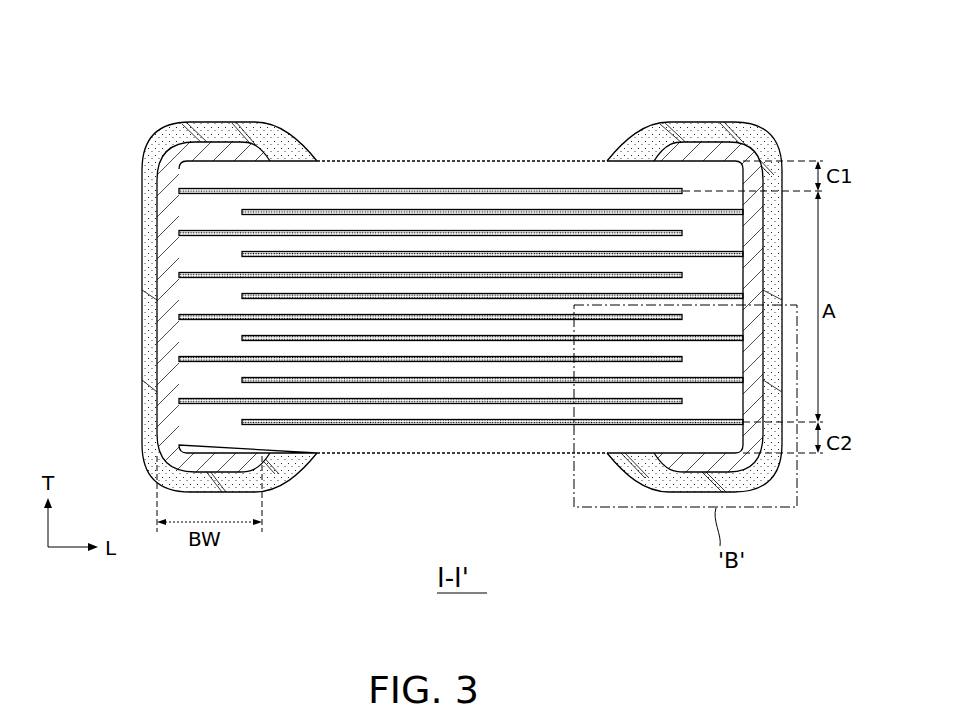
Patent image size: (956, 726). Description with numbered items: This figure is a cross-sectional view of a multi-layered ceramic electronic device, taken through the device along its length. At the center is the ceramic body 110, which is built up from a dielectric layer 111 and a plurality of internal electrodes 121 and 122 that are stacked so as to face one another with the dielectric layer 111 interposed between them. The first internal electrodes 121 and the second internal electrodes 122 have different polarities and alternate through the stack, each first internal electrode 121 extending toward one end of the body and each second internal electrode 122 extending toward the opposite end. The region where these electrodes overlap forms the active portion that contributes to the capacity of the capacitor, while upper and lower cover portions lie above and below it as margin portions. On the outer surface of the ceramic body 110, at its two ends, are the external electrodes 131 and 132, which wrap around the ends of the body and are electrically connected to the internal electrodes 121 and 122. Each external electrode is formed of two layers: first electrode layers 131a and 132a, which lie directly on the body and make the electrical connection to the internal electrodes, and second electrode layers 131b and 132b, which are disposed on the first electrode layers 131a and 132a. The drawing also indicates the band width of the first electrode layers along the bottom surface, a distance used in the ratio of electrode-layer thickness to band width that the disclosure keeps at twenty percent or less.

The ceramic body 110 is at (448, 160).
The dielectric layer 111 is at (197, 213).
The first internal electrode 121 is at (360, 188).
The second internal electrode 122 is at (248, 216).
The first external electrode 131 is at (306, 262).
The first electrode layer 131a is at (190, 133).
The second electrode layer 131b is at (220, 131).
The second external electrode 132 is at (628, 262).
The first electrode layer 132a is at (735, 133).
The second electrode layer 132b is at (763, 66).